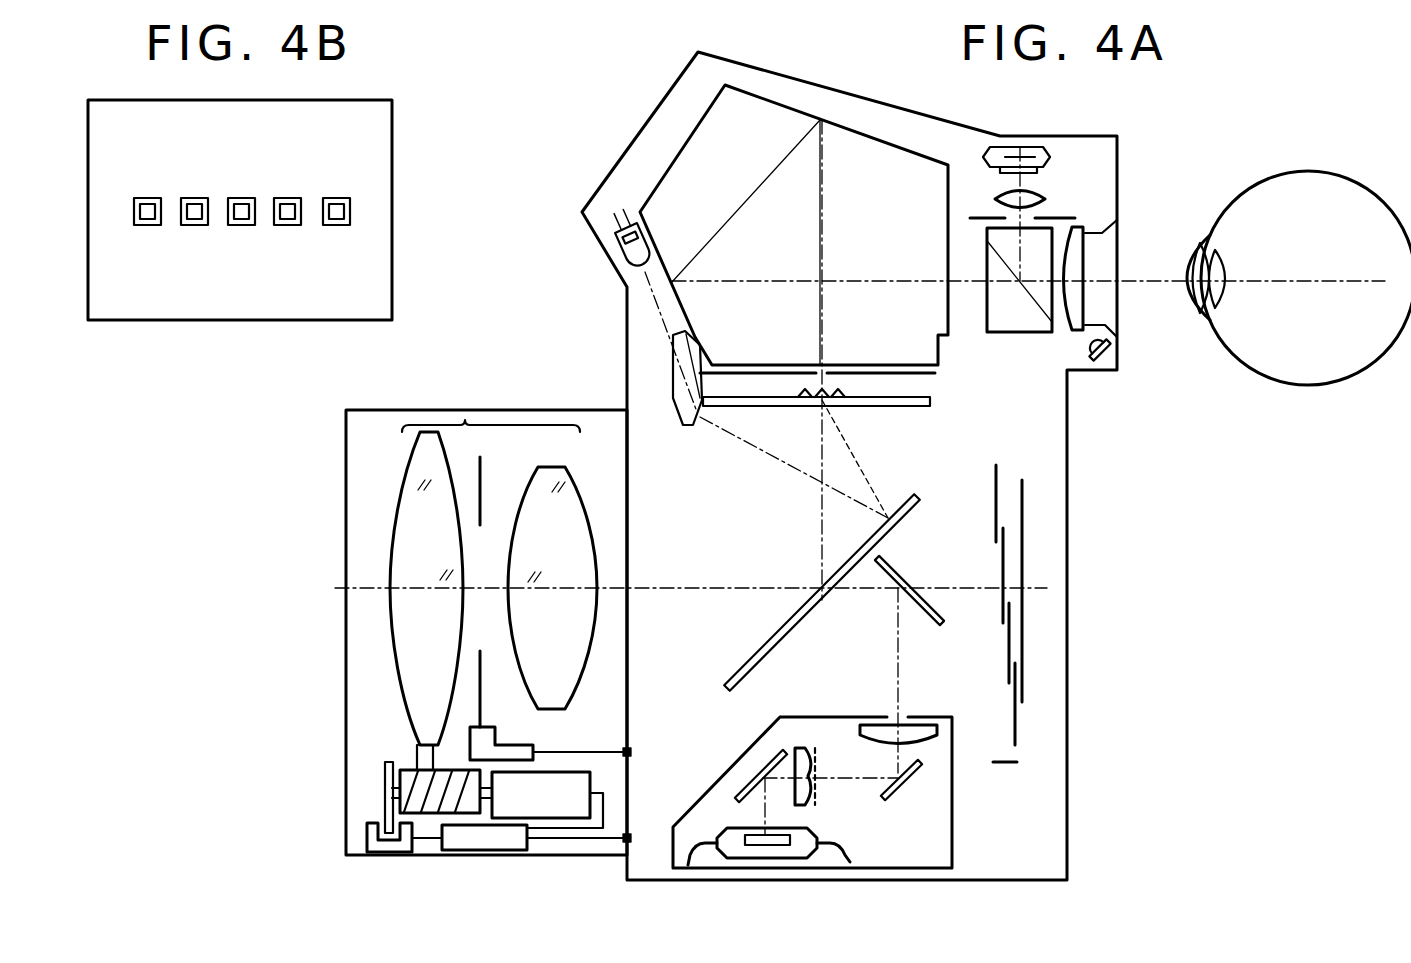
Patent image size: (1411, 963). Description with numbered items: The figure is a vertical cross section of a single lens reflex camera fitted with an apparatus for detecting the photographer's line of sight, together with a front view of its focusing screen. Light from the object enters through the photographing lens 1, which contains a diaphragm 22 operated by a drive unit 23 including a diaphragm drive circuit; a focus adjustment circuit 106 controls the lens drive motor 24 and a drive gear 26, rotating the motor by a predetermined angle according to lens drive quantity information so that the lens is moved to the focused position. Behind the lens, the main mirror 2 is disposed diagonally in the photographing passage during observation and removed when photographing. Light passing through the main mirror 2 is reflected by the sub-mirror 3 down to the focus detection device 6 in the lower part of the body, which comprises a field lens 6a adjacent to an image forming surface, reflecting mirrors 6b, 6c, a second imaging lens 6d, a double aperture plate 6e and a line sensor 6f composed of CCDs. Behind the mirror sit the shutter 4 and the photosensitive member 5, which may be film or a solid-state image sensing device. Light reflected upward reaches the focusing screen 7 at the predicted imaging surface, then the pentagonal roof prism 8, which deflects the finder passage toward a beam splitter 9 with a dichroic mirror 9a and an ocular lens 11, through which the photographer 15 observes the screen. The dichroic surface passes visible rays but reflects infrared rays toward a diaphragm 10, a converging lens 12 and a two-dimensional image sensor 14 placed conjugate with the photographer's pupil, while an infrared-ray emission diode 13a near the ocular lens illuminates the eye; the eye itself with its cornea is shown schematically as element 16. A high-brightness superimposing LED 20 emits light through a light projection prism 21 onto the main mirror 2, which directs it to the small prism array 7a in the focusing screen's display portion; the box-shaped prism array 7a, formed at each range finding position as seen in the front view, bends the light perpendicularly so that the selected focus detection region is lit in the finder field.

In FIG. 4A, the photographing lens 1 is at (465, 420).
In FIG. 4A, the main mirror 2 is at (797, 620).
In FIG. 4A, the sub-mirror 3 is at (940, 627).
In FIG. 4A, the shutter 4 is at (996, 507).
In FIG. 4A, the photosensitive member 5 is at (1022, 622).
In FIG. 4A, the focus detection device 6 is at (952, 822).
In FIG. 4A, the field lens 6a is at (930, 738).
In FIG. 4A, the reflecting mirror 6b is at (893, 796).
In FIG. 4A, the reflecting mirror 6c is at (755, 780).
In FIG. 4A, the second imaging lens 6d is at (801, 748).
In FIG. 4A, the double aperture plate 6e is at (818, 800).
In FIG. 4A, the line sensor 6f is at (790, 838).
In FIG. 4B, the focusing screen 7 is at (240, 320).
In FIG. 4A, the focusing screen 7 is at (908, 406).
In FIG. 4B, the small prism array 7a is at (155, 198).
In FIG. 4A, the small prism array 7a is at (840, 402).
In FIG. 4A, the pentagonal roof prism 8 is at (658, 187).
In FIG. 4A, the beam splitter 9 is at (992, 335).
In FIG. 4A, the dichroic mirror 9a is at (1032, 320).
In FIG. 4A, the diaphragm 10 is at (1092, 215).
In FIG. 4A, the ocular lens 11 is at (1073, 326).
In FIG. 4A, the converging lens 12 is at (1046, 197).
In FIG. 4A, the infrared-ray emission diode 13a is at (1117, 360).
In FIG. 4A, the image sensor 14 is at (1046, 157).
In FIG. 4A, the photographer 15 is at (1308, 174).
In FIG. 4A, the cornea 16 is at (1196, 240).
In FIG. 4A, the superimposing LED 20 is at (618, 244).
In FIG. 4A, the light projection prism 21 is at (672, 360).
In FIG. 4A, the diaphragm 22 is at (481, 460).
In FIG. 4A, the drive unit 23 is at (535, 748).
In FIG. 4A, the lens drive motor 24 is at (547, 800).
In FIG. 4A, the drive gear 26 is at (408, 770).
In FIG. 4A, the focus adjustment circuit 106 is at (521, 838).